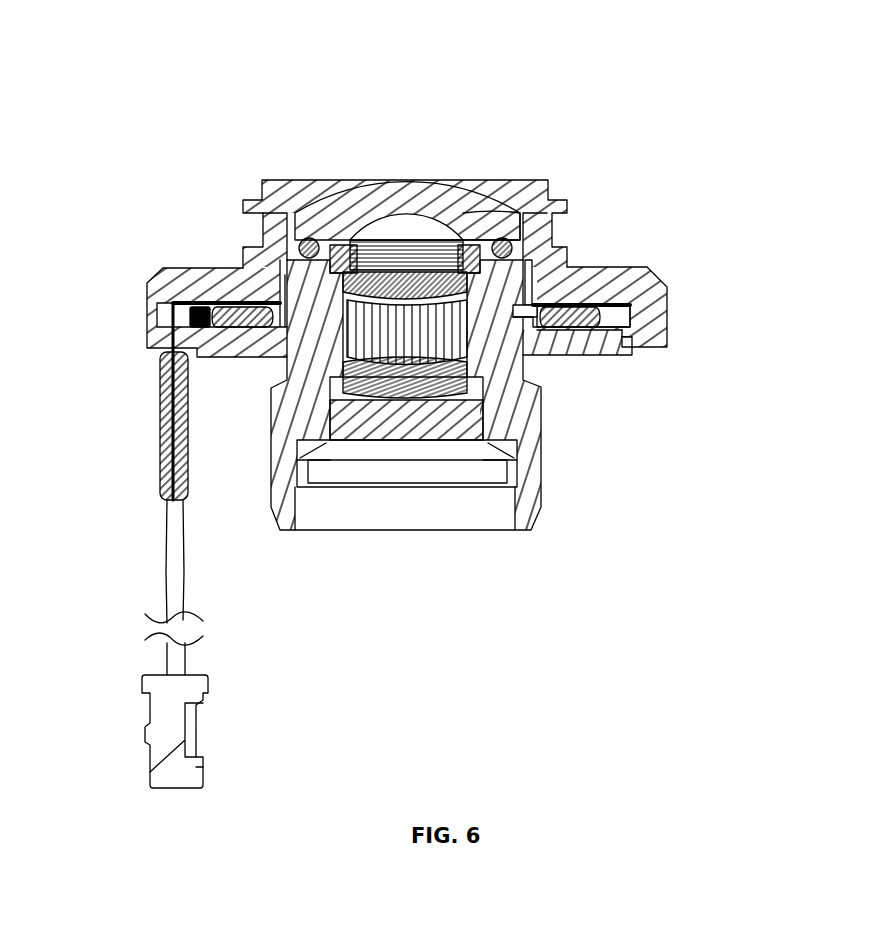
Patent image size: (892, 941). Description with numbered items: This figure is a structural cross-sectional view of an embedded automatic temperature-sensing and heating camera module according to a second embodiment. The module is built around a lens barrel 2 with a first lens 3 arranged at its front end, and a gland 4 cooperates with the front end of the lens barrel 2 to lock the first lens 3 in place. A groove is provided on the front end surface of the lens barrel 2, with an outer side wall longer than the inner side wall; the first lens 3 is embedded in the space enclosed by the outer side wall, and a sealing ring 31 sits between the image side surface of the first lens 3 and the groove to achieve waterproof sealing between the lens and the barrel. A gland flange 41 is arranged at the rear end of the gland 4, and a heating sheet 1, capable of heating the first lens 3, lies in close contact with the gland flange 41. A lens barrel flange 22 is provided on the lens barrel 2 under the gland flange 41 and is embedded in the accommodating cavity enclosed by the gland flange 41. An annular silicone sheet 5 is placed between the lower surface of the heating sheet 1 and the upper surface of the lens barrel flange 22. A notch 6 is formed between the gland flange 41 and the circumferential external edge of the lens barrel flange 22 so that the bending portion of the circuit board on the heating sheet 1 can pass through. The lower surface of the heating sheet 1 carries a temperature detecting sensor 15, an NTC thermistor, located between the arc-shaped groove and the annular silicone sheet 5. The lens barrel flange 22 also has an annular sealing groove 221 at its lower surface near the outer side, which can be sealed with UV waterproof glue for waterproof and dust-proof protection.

The heating sheet 1 is at (207, 303).
The temperature detecting sensor 15 is at (195, 350).
The annular silicone sheet 5 is at (237, 342).
The notch 6 is at (160, 340).
The gland 4 is at (270, 287).
The first lens 3 is at (372, 185).
The sealing ring 31 is at (497, 185).
The gland flange 41 is at (613, 267).
The lens barrel 2 is at (533, 475).
The lens barrel flange 22 is at (585, 342).
The annular sealing groove 221 is at (632, 342).